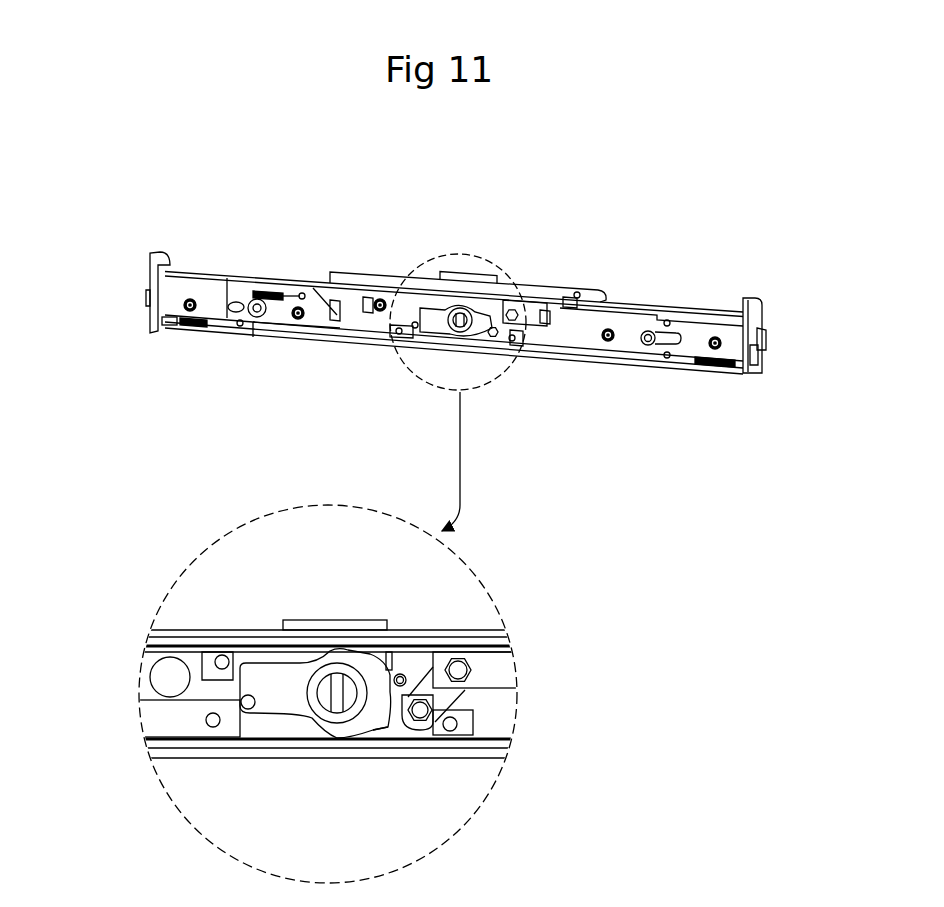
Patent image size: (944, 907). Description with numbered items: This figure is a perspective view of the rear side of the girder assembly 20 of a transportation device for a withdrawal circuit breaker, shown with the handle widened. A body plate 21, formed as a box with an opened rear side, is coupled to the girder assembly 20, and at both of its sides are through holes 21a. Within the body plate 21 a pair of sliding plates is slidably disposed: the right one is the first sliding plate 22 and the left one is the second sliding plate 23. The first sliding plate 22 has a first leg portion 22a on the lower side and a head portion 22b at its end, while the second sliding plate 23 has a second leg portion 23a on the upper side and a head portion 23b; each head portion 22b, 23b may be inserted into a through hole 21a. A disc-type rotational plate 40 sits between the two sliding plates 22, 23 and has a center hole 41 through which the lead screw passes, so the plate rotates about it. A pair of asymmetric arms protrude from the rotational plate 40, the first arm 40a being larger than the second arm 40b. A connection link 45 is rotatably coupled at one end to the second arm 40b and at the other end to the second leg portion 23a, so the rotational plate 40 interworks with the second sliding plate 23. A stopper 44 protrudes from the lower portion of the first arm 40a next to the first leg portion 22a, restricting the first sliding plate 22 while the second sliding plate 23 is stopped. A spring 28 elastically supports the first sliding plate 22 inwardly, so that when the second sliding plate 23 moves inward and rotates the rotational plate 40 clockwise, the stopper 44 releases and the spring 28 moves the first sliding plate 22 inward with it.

The girder assembly 20 is at (390, 277).
The body plate 21 is at (643, 308).
The through hole 21a is at (762, 350).
The first sliding plate 22 is at (208, 288).
The first leg portion 22a is at (337, 343).
The head portion 22b is at (146, 298).
The second sliding plate 23 is at (695, 325).
The second leg portion 23a is at (523, 310).
The head portion 23b is at (766, 338).
The spring 28 is at (273, 293).
The rotational plate 40 is at (433, 325).
The first arm 40a is at (260, 668).
The second arm 40b is at (393, 717).
The center hole 41 is at (458, 330).
The stopper 44 is at (247, 700).
The connection link 45 is at (510, 327).